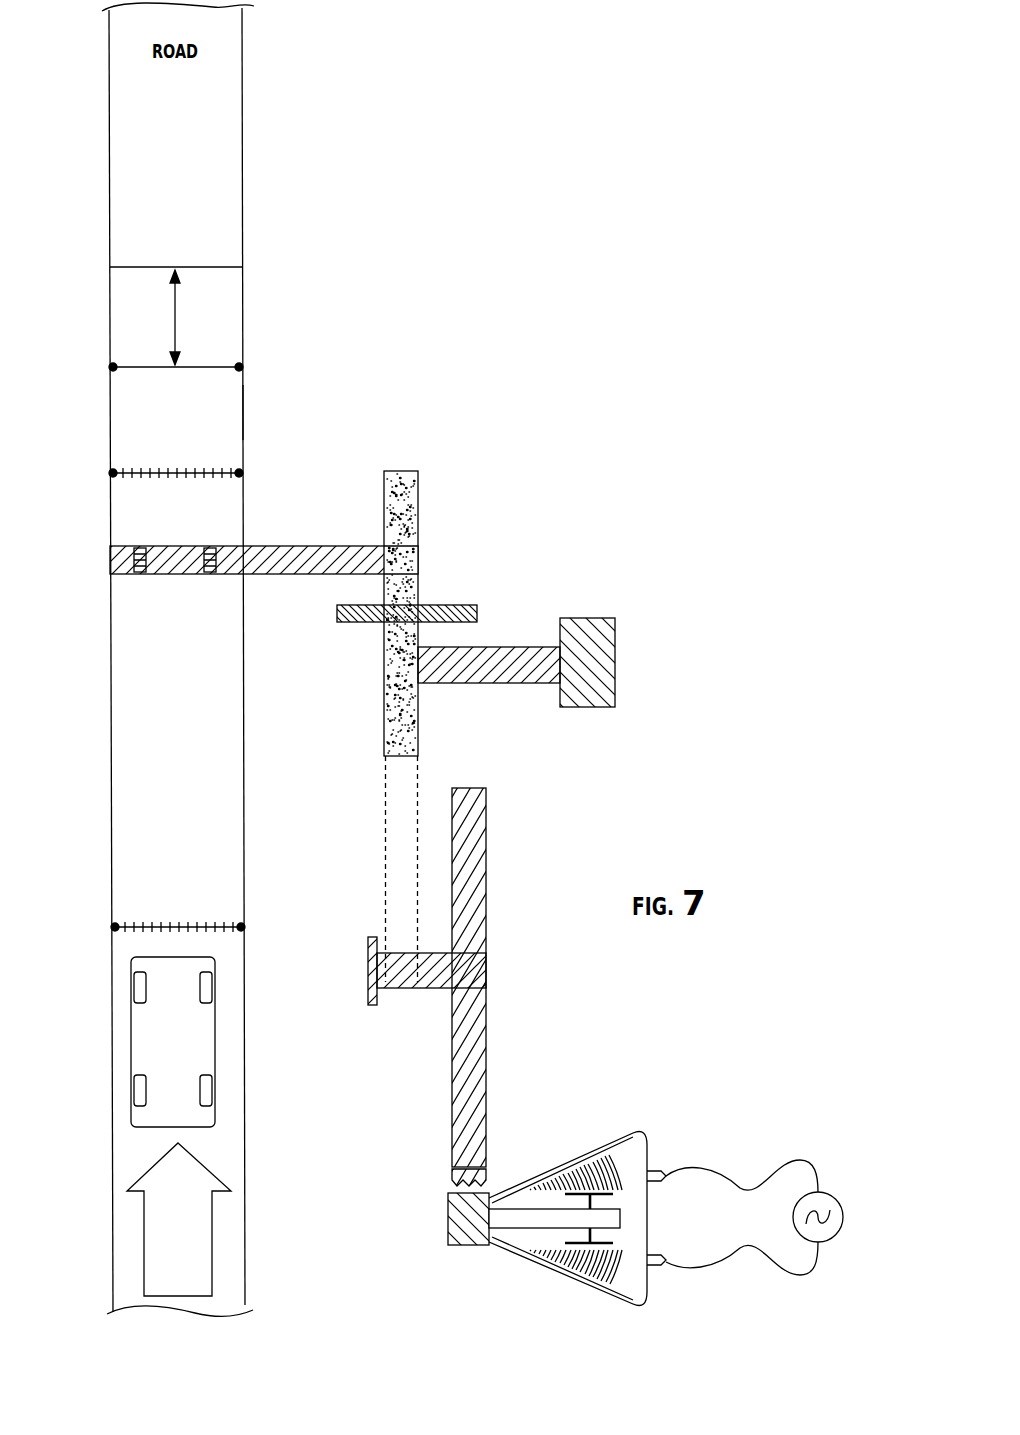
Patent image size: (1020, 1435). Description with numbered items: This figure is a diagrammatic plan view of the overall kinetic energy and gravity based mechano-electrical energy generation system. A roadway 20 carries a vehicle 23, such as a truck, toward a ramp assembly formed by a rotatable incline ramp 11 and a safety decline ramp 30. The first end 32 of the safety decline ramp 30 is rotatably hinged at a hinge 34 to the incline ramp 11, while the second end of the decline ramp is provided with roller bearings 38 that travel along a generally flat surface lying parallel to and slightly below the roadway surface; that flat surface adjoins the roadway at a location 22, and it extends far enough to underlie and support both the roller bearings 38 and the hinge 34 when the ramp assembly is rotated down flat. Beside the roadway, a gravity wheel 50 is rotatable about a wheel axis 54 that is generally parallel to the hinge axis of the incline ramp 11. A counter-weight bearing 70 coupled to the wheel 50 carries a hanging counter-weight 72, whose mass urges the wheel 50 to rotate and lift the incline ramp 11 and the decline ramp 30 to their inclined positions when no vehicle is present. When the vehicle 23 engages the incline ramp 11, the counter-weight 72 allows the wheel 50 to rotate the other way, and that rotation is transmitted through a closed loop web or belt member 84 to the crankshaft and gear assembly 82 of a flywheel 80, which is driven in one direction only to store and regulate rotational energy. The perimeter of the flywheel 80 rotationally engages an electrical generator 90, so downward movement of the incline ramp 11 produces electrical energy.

The incline ramp 11 is at (132, 762).
The roadway 20 is at (230, 152).
The location 22 is at (243, 267).
The vehicle 23 is at (131, 1072).
The safety decline ramp 30 is at (236, 410).
The first end 32 is at (110, 546).
The hinge 34 is at (113, 473).
The roller bearings 38 is at (243, 367).
The gravity wheel 50 is at (400, 471).
The wheel axis 54 is at (458, 605).
The counter-weight bearing 70 is at (498, 647).
The counter-weight 72 is at (598, 618).
The flywheel 80 is at (488, 855).
The crankshaft and gear assembly 82 is at (488, 980).
The closed loop web or belt member 84 is at (385, 812).
The electrical generator 90 is at (578, 1160).